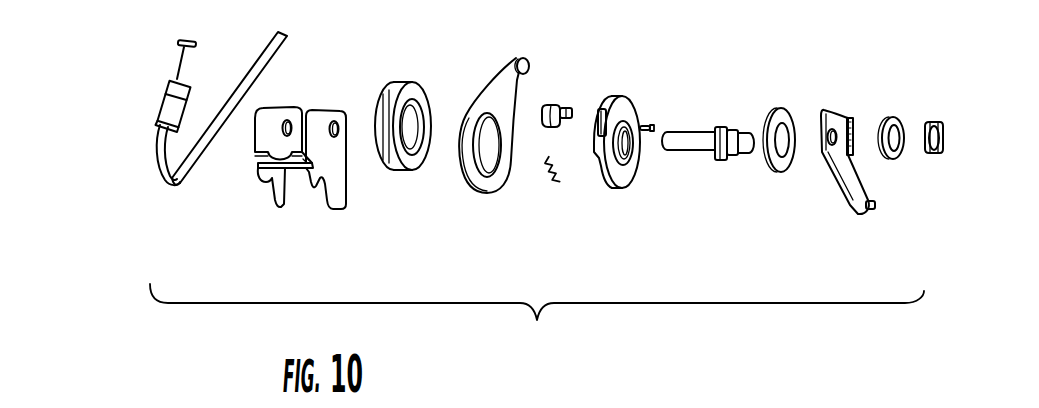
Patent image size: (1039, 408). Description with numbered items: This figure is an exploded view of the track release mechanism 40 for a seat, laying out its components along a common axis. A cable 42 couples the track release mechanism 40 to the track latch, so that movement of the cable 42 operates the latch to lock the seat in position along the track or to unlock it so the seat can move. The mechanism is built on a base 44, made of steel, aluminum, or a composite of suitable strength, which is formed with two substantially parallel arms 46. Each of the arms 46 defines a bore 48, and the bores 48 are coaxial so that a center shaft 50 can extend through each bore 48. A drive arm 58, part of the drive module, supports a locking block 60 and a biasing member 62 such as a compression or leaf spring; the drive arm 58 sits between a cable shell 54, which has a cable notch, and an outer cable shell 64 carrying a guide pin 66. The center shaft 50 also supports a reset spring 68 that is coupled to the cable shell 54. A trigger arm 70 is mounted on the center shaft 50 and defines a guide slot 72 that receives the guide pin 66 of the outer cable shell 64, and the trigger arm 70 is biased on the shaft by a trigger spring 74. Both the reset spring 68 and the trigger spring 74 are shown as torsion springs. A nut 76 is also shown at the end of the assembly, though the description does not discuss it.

The track release mechanism 40 is at (537, 324).
The cable 42 is at (158, 166).
The base 44 is at (314, 169).
The arms 46 is at (283, 107).
The bore 48 is at (294, 118).
The center shaft 50 is at (690, 130).
The cable shell 54 is at (412, 172).
The drive arm 58 is at (477, 92).
The locking block 60 is at (552, 103).
The biasing member 62 is at (547, 181).
The outer cable shell 64 is at (602, 96).
The guide pin 66 is at (653, 127).
The reset spring 68 is at (782, 170).
The trigger arm 70 is at (854, 156).
The guide slot 72 is at (857, 121).
The trigger spring 74 is at (897, 118).
The nut 76 is at (945, 139).